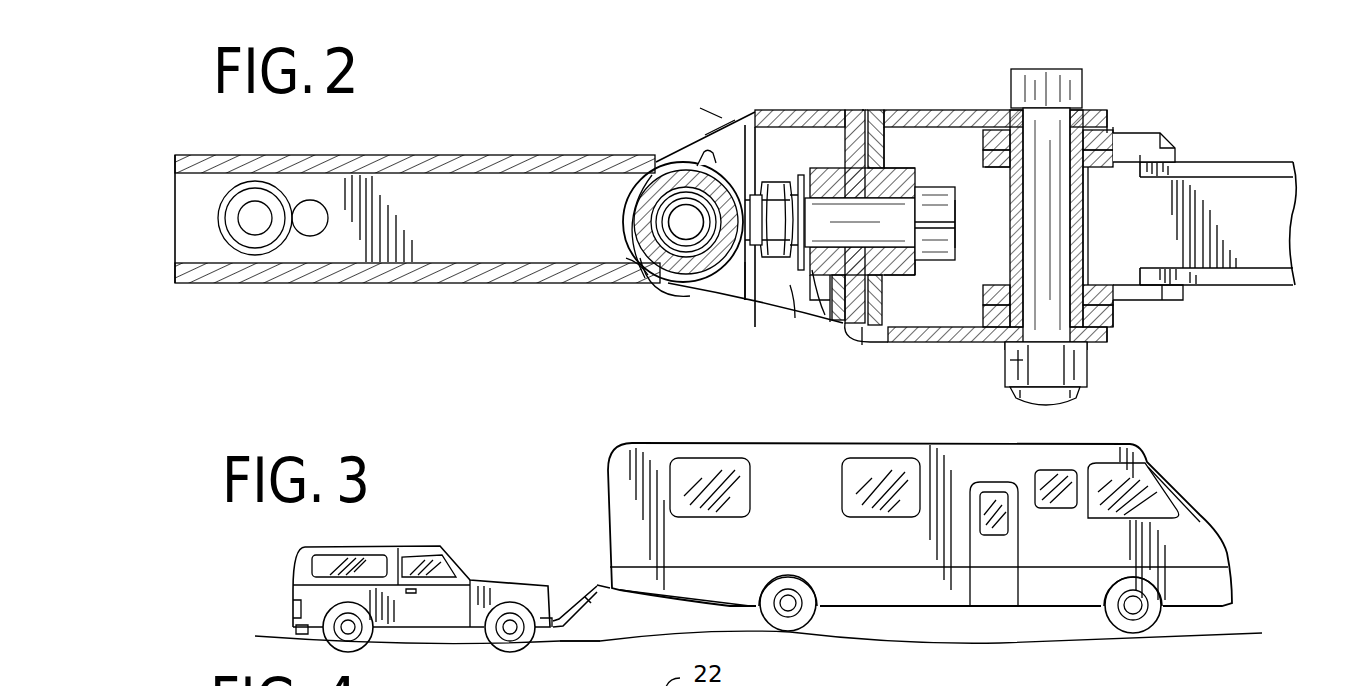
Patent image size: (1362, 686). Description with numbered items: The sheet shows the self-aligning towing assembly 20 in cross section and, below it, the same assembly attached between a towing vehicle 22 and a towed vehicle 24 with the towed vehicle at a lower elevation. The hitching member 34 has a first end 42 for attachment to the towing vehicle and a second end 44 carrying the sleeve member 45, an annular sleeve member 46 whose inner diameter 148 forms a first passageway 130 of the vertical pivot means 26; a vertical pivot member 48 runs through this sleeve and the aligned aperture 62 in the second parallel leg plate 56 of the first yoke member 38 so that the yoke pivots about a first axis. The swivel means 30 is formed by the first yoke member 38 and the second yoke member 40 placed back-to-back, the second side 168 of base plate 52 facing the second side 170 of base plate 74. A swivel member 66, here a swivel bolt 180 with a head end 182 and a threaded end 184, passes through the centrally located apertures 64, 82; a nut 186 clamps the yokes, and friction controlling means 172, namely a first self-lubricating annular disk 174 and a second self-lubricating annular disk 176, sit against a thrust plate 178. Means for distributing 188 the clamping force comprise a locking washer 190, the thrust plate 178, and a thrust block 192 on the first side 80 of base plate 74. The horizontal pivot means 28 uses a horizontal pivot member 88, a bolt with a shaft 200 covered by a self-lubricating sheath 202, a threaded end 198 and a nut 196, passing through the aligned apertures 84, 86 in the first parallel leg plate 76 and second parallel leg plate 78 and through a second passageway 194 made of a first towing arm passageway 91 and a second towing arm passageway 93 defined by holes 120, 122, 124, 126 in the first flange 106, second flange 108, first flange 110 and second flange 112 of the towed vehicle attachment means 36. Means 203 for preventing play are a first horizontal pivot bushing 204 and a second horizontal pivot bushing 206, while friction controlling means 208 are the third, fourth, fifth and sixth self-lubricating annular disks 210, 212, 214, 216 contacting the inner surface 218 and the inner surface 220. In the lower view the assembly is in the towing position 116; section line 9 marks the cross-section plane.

In FIG. 2, the section line 9- 9 is at (137, 141).
In FIG. 2, the self-aligning towing assembly 20 is at (862, 56).
In FIG. 3, the self-aligning towing assembly 20 is at (575, 583).
In FIG. 3, the towing vehicle 22 is at (626, 443).
In FIG. 3, the towed vehicle 24 is at (378, 548).
In FIG. 2, the vertical pivot means 26 is at (660, 313).
In FIG. 2, the horizontal pivot means 28 is at (1067, 177).
In FIG. 2, the swivel means 30 is at (841, 377).
In FIG. 2, the hitching member 34 is at (398, 162).
In FIG. 2, the towed vehicle attachment means 36 is at (1276, 307).
In FIG. 2, the first yoke member 38 is at (688, 155).
In FIG. 2, the second yoke member 40 is at (921, 118).
In FIG. 2, the first end 42 is at (186, 296).
In FIG. 2, the second end 44 is at (626, 316).
In FIG. 2, the sleeve member 45 is at (666, 163).
In FIG. 2, the annular sleeve member 46 is at (661, 198).
In FIG. 2, the vertical pivot member 48 is at (708, 272).
In FIG. 2, the base plate 52 is at (846, 110).
In FIG. 2, the second parallel leg plate 56 is at (715, 142).
In FIG. 2, the aligned aperture 62 is at (655, 226).
In FIG. 2, the centrally located aperture 64 is at (790, 187).
In FIG. 2, the swivel member 66 is at (946, 118).
In FIG. 2, the base plate 74 is at (885, 338).
In FIG. 2, the first parallel leg plate 76 is at (968, 116).
In FIG. 2, the second parallel leg plate 78 is at (1093, 344).
In FIG. 2, the first side 80 is at (856, 330).
In FIG. 2, the centrally located aperture 82 is at (882, 284).
In FIG. 2, the aligned aperture 84 is at (1085, 112).
In FIG. 2, the aligned aperture 86 is at (1014, 82).
In FIG. 2, the horizontal pivot member 88 is at (1093, 392).
In FIG. 2, the first towing arm passageway 91 is at (1130, 125).
In FIG. 2, the second towing arm passageway 93 is at (1124, 318).
In FIG. 2, the first flange 106 is at (1010, 200).
In FIG. 2, the second flange 108 is at (1115, 327).
In FIG. 2, the first flange 110 is at (1150, 137).
In FIG. 2, the second flange 112 is at (930, 270).
In FIG. 3, the towing position 116 is at (527, 492).
In FIG. 2, the hole 120 is at (1012, 208).
In FIG. 2, the hole 122 is at (1000, 336).
In FIG. 2, the hole 124 is at (1115, 128).
In FIG. 2, the hole 126 is at (1010, 250).
In FIG. 2, the first passageway 130 is at (648, 238).
In FIG. 2, the inner diameter 148 is at (630, 260).
In FIG. 2, the second side 168 is at (862, 345).
In FIG. 2, the second side 170 is at (874, 110).
In FIG. 2, the friction controlling means 172 is at (879, 68).
In FIG. 2, the first self-lubricating annular disk 174 is at (858, 110).
In FIG. 2, the second self-lubricating annular disk 176 is at (801, 272).
In FIG. 2, the thrust plate 178 is at (791, 272).
In FIG. 2, the swivel bolt 180 is at (743, 142).
In FIG. 2, the head end 182 is at (976, 280).
In FIG. 2, the threaded end 184 is at (746, 282).
In FIG. 2, the nut 186 is at (777, 187).
In FIG. 2, the means for distributing 188 is at (816, 372).
In FIG. 2, the locking washer 190 is at (790, 312).
In FIG. 2, the thrust block 192 is at (893, 176).
In FIG. 2, the second passageway 194 is at (1097, 191).
In FIG. 2, the nut 196 is at (1008, 362).
In FIG. 2, the threaded end 198 is at (1110, 404).
In FIG. 2, the shaft 200 is at (1092, 208).
In FIG. 2, the self-lubricating sheath 202 is at (1083, 230).
In FIG. 2, the means for preventing play 203 is at (1233, 136).
In FIG. 2, the first horizontal pivot bushing 204 is at (1012, 210).
In FIG. 2, the second horizontal pivot bushing 206 is at (1012, 236).
In FIG. 2, the friction controlling means 208 is at (1170, 368).
In FIG. 2, the third self-lubricating annular disk 210 is at (1013, 110).
In FIG. 2, the fourth self-lubricating annular disk 212 is at (1010, 147).
In FIG. 2, the fifth self-lubricating annular disk 214 is at (1113, 298).
In FIG. 2, the sixth self-lubricating annular disk 216 is at (985, 330).
In FIG. 2, the inner surface 218 is at (995, 130).
In FIG. 2, the inner surface 220 is at (1113, 340).